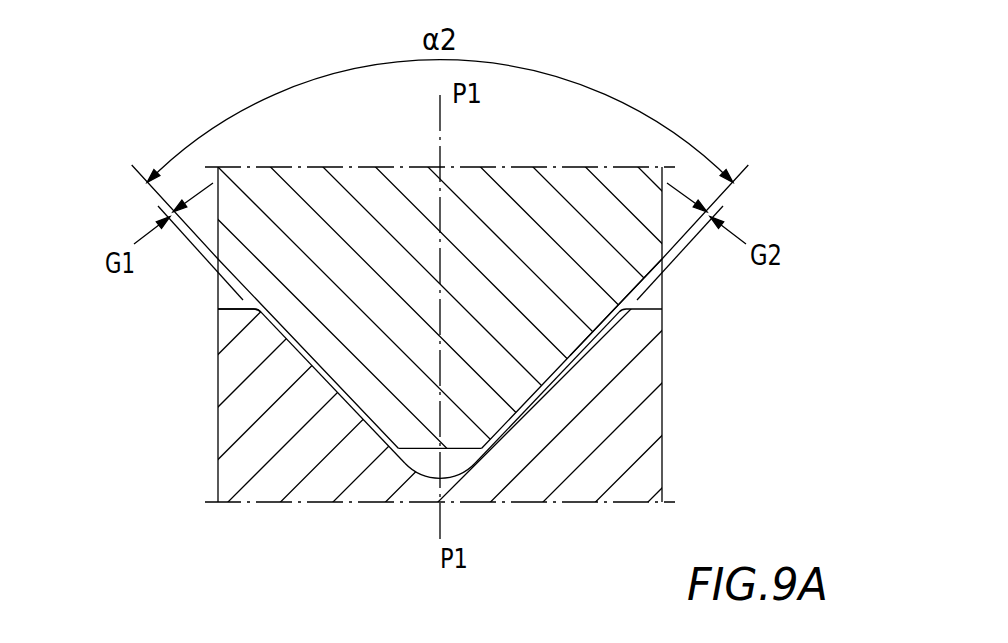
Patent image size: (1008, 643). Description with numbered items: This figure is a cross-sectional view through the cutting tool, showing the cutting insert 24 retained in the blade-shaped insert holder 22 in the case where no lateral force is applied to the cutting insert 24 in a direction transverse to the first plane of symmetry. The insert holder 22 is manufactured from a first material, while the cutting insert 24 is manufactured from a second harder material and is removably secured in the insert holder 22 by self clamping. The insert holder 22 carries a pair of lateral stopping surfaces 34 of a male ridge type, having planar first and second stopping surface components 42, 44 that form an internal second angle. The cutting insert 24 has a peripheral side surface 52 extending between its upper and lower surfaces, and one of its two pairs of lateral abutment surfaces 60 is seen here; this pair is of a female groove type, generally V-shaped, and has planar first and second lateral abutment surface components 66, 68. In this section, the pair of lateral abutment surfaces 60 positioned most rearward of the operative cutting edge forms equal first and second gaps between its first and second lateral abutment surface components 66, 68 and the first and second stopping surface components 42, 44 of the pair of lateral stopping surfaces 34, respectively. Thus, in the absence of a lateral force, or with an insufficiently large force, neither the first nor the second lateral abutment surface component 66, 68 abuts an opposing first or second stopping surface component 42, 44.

The insert holder 22 is at (368, 250).
The cutting insert 24 is at (330, 473).
The pair of lateral stopping surfaces 34 is at (347, 402).
The first stopping surface component 42 is at (257, 313).
The second stopping surface component 44 is at (575, 354).
The peripheral side surface 52 is at (665, 408).
The pair of lateral abutment surfaces 60 is at (542, 387).
The first lateral abutment surface component 66 is at (295, 340).
The second lateral abutment surface component 68 is at (570, 354).